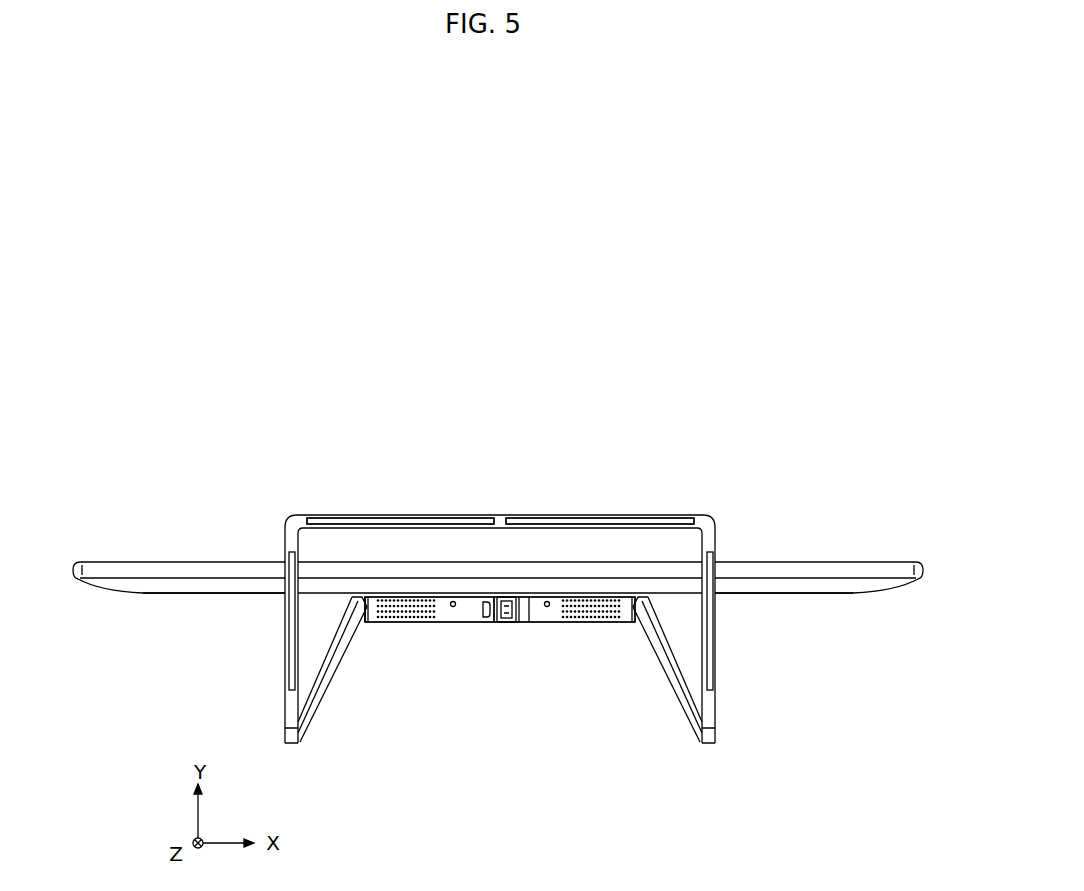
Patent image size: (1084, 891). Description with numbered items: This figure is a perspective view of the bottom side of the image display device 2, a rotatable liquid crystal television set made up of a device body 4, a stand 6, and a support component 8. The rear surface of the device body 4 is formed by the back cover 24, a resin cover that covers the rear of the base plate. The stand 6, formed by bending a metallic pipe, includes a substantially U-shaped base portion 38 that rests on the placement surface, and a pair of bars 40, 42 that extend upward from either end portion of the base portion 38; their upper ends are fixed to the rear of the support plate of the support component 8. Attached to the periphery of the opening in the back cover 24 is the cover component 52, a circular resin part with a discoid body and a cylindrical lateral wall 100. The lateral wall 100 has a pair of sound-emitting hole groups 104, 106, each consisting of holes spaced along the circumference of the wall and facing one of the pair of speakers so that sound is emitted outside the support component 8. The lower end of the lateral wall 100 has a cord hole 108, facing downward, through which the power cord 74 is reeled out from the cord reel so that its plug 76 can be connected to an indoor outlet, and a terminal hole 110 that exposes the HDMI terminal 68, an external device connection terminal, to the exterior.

The image display device 2 is at (730, 455).
The device body 4 is at (835, 555).
The stand 6 is at (726, 699).
The support component 8 is at (551, 630).
The back cover 24 is at (819, 590).
The base portion 38 is at (483, 517).
The bar 40 is at (342, 643).
The bar 42 is at (673, 678).
The cover component 52 is at (460, 622).
The HDMI terminal 68 is at (487, 622).
The power cord 74 is at (509, 622).
The plug 76 is at (519, 622).
The lateral wall 100 is at (445, 617).
The sound-emitting hole group 104 is at (602, 617).
The sound-emitting hole group 106 is at (407, 617).
The cord hole 108 is at (512, 597).
The terminal hole 110 is at (485, 597).